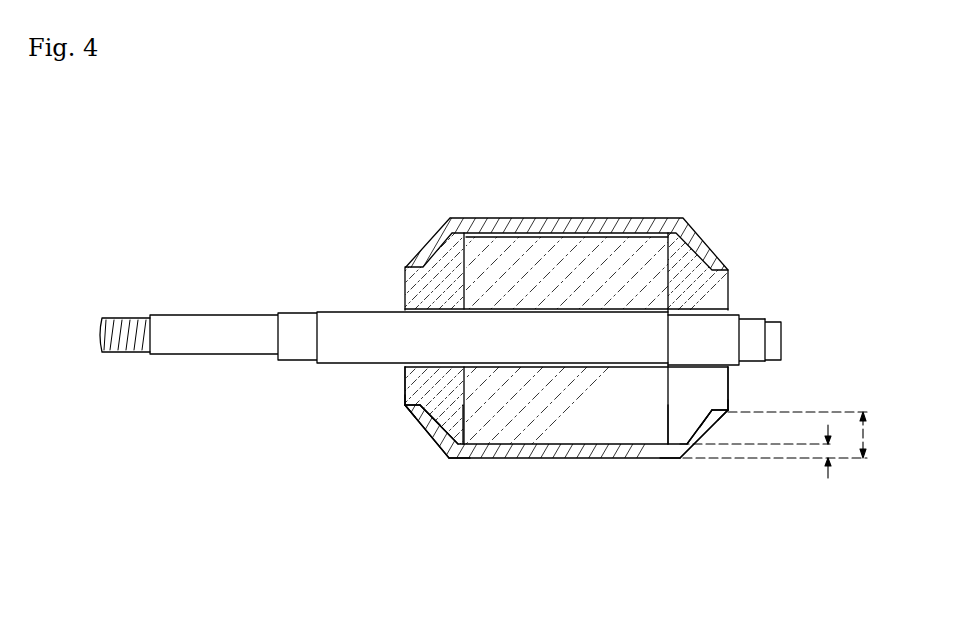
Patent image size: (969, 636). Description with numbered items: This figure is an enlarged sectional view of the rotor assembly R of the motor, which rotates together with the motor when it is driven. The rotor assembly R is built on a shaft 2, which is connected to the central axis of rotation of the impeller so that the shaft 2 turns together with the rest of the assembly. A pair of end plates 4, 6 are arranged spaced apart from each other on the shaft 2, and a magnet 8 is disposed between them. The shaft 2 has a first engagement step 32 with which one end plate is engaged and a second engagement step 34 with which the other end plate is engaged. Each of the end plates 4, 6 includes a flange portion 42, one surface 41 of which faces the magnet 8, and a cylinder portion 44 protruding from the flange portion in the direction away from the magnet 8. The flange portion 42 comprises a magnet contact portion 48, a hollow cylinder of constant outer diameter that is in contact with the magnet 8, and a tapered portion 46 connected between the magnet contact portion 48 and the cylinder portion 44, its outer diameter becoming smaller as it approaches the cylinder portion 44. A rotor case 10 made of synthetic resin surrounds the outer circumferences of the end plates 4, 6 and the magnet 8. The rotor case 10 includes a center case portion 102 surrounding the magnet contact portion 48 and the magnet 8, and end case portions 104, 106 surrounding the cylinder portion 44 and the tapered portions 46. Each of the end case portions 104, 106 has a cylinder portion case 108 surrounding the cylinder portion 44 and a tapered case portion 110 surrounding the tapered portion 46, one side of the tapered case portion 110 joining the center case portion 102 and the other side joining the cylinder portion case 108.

The rotor assembly R is at (767, 220).
The shaft 2 is at (777, 323).
The end plate 4 is at (700, 360).
The end plate 6 is at (432, 362).
The magnet 8 is at (527, 262).
The rotor case 10 is at (571, 457).
The first engagement step 32 is at (656, 300).
The second engagement step 34 is at (476, 300).
The surface 41 is at (466, 405).
The flange portion 42 is at (435, 562).
The cylinder portion 44 is at (405, 379).
The tapered portion 46 is at (440, 455).
The magnet contact portion 48 is at (462, 443).
The center case portion 102 is at (595, 228).
The end case portion 104 is at (772, 550).
The end case portion 106 is at (360, 547).
The cylinder portion case 108 is at (417, 418).
The tapered case portion 110 is at (426, 434).